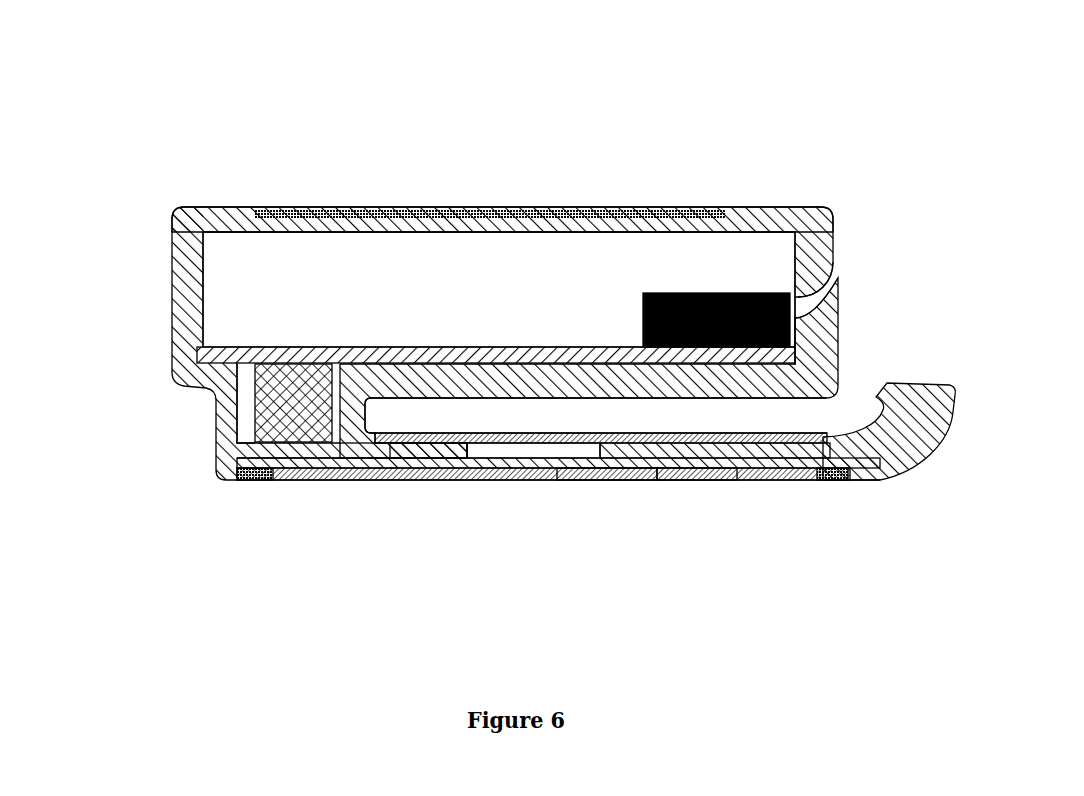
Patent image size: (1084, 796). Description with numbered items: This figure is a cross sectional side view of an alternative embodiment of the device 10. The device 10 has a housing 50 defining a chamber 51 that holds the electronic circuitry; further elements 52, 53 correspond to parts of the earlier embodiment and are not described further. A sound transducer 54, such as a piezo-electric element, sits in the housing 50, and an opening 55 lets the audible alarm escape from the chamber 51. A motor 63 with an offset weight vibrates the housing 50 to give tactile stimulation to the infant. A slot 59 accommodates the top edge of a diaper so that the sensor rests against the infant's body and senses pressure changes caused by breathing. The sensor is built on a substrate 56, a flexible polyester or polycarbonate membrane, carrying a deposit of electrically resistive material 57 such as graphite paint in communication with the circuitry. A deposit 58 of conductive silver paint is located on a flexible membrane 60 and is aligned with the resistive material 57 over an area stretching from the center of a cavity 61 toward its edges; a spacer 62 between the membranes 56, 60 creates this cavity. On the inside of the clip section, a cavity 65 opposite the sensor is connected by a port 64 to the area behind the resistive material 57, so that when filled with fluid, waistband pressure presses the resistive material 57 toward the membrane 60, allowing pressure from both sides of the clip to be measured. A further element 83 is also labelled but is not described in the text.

The device 10 is at (726, 184).
The housing 50 is at (218, 205).
The chamber 51 is at (310, 258).
The top wall 52 is at (397, 207).
The circuit board 53 is at (488, 350).
The sound transducer 54 is at (643, 293).
The opening 55 is at (827, 283).
The substrate 56 is at (750, 480).
The electrically resistive material 57 is at (740, 480).
The deposit of electrically conductive material 58 is at (730, 480).
The slot 59 is at (640, 418).
The flexible membrane 60 is at (373, 480).
The cavity 61 is at (330, 480).
The spacer 62 is at (247, 480).
The motor 63 is at (467, 443).
The port 64 is at (550, 450).
The cavity 65 is at (413, 440).
The gap 83 is at (233, 423).